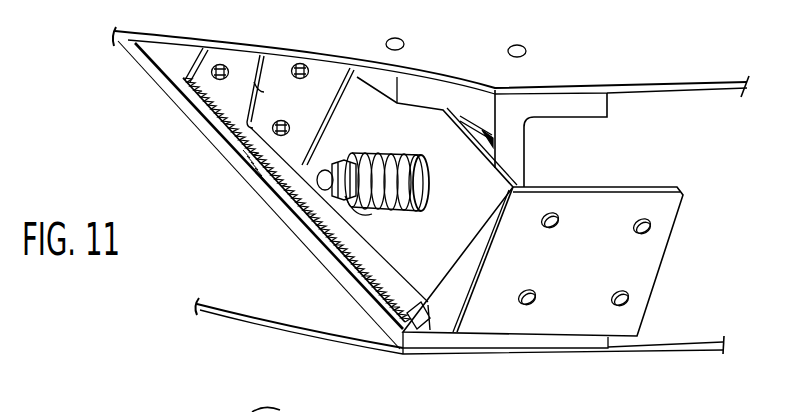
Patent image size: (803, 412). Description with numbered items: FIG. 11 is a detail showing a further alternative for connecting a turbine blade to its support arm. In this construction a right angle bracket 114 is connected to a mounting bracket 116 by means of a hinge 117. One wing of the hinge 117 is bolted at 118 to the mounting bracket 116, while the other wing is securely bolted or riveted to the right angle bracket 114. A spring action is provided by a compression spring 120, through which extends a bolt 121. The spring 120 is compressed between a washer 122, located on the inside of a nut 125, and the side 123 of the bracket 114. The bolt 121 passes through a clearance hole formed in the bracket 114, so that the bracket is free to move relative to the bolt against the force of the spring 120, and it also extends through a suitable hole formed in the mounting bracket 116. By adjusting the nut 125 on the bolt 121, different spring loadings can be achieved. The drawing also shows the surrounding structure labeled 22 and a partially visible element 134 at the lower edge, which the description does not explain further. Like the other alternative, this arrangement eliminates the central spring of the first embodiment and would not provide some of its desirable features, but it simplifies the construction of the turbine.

The support rail and bracket 22 is at (521, 149).
The right angle bracket 114 is at (656, 257).
The mounting bracket 116 is at (423, 318).
The hinge 117 is at (247, 138).
The bolt 118 is at (212, 72).
The compression spring 120 is at (388, 153).
The bolt 121 is at (334, 162).
The washer 122 is at (360, 212).
The side of the bracket 123 is at (447, 132).
The nut 125 is at (330, 193).
The member (partially shown) 134 is at (283, 408).